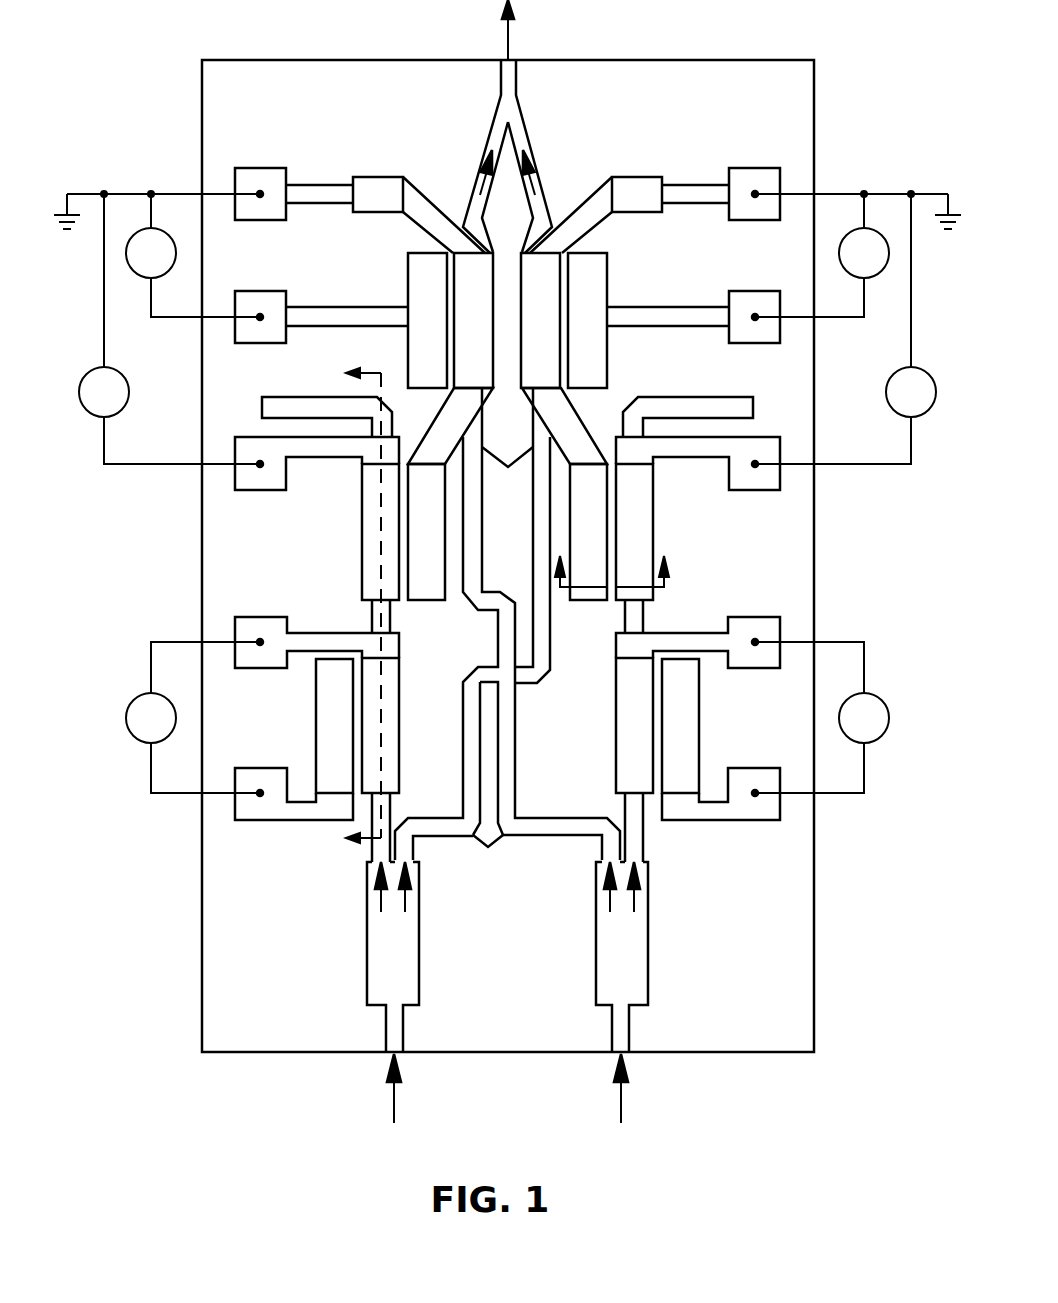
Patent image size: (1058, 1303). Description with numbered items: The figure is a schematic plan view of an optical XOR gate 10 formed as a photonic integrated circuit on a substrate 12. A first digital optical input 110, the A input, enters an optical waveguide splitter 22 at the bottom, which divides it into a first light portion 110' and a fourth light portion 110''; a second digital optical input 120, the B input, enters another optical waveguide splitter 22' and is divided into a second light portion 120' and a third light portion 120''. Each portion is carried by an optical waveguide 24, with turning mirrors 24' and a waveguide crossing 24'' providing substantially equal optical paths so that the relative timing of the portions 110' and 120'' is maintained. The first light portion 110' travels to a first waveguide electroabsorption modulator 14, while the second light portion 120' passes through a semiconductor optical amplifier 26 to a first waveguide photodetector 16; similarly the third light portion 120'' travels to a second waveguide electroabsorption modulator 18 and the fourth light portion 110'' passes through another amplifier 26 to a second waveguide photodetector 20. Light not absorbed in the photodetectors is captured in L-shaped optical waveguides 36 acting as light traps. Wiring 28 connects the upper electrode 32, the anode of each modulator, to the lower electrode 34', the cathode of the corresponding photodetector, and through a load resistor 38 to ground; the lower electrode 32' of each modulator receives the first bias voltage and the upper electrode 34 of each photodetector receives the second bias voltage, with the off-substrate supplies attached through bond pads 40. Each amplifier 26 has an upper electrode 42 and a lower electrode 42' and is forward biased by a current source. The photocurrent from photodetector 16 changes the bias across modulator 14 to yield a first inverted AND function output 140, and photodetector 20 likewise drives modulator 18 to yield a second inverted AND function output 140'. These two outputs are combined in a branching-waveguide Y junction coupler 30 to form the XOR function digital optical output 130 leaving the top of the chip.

The optical XOR gate 10 is at (507, 571).
The substrate 12 is at (750, 1023).
The first waveguide electroabsorption modulator 14 is at (615, 287).
The first waveguide photodetector 16 is at (657, 500).
The second waveguide electroabsorption modulator 18 is at (400, 287).
The second waveguide photodetector 20 is at (354, 543).
The optical waveguide splitter 22 is at (364, 826).
The optical waveguide splitter 22' is at (596, 826).
The optical waveguide 24 is at (507, 624).
The 90° turning mirror 24' is at (492, 855).
The waveguide crossing 24'' is at (546, 549).
The semiconductor optical amplifier 26 is at (402, 750).
The wiring 28 is at (443, 405).
The branching-waveguide Y junction coupler 30 is at (490, 106).
The upper electrode 32 is at (507, 320).
The lower electrode 32' is at (507, 320).
The upper electrode 34 is at (507, 532).
The lower electrode 34' is at (507, 532).
The L-shaped optical waveguide 36 is at (280, 397).
The load resistor 38 is at (366, 207).
The bond pad 40 is at (758, 222).
The upper electrode 42 is at (507, 725).
The lower electrode 42' is at (507, 726).
The first digital optical input 110 is at (334, 1090).
The first light portion 110' is at (437, 890).
The fourth light portion 110'' is at (344, 890).
The second digital optical input 120 is at (682, 1090).
The second light portion 120' is at (668, 890).
The third light portion 120'' is at (575, 890).
The XOR function digital optical output 130 is at (505, 33).
The first inverted AND function output 140 is at (559, 172).
The second inverted AND function output 140' is at (453, 172).